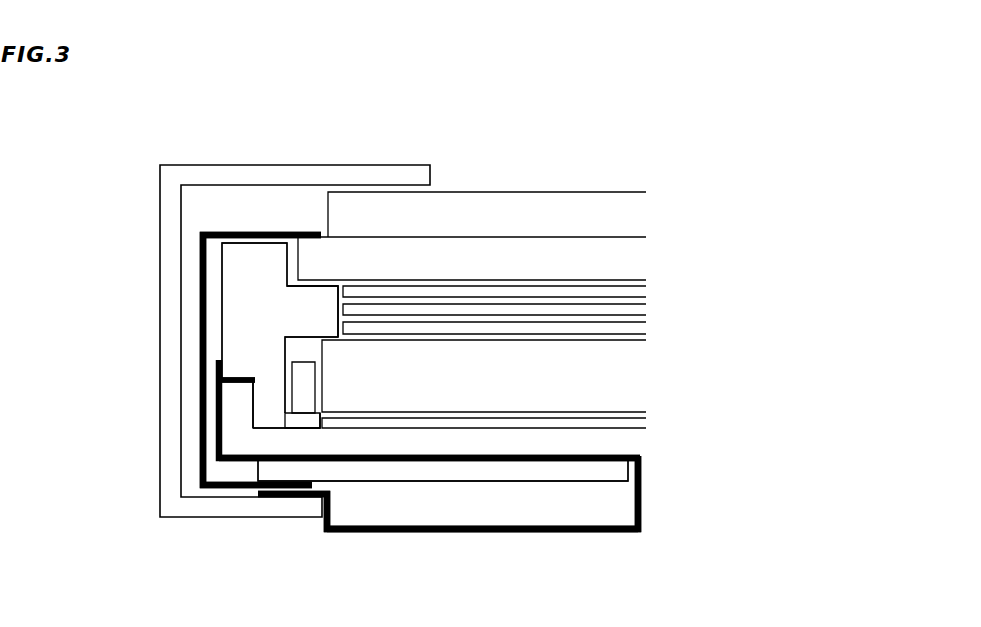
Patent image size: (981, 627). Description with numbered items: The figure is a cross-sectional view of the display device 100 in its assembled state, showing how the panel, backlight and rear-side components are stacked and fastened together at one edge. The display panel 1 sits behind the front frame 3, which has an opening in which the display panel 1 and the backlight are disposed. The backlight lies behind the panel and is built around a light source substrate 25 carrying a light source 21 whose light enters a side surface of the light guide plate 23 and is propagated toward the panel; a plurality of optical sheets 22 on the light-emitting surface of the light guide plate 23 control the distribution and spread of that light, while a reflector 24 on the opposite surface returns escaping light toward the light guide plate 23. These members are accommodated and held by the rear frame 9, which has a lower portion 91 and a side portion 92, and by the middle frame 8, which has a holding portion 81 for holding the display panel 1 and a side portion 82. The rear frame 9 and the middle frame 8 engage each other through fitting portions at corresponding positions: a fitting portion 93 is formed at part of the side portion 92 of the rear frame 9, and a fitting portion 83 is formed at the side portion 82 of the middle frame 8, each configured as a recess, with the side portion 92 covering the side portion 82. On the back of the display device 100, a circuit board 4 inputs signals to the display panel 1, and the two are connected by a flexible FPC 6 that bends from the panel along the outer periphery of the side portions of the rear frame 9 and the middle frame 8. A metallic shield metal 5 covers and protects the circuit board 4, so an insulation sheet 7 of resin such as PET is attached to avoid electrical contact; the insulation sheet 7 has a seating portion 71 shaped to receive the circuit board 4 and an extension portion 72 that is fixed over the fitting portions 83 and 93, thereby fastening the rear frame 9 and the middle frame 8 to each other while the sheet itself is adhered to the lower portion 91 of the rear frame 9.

The display device 100 is at (678, 507).
The display panel 1 is at (653, 195).
The light source 21 is at (307, 378).
The optical sheets 22 is at (653, 288).
The light guide plate 23 is at (627, 390).
The reflector 24 is at (642, 420).
The light source substrate 25 is at (303, 418).
The front frame 3 is at (183, 172).
The circuit board 4 is at (585, 475).
The shield metal 5 is at (460, 528).
The FPC 6 is at (198, 347).
The insulation sheet 7 is at (412, 457).
The seating portion 71 is at (470, 462).
The extension portion 72 is at (217, 395).
The middle frame 8 is at (233, 273).
The holding portion 81 is at (313, 290).
The side portion 82 is at (230, 322).
The fitting portion 83 is at (256, 403).
The rear frame 9 is at (635, 440).
The lower portion 91 is at (258, 447).
The side portion 92 is at (238, 423).
The fitting portion 93 is at (250, 397).